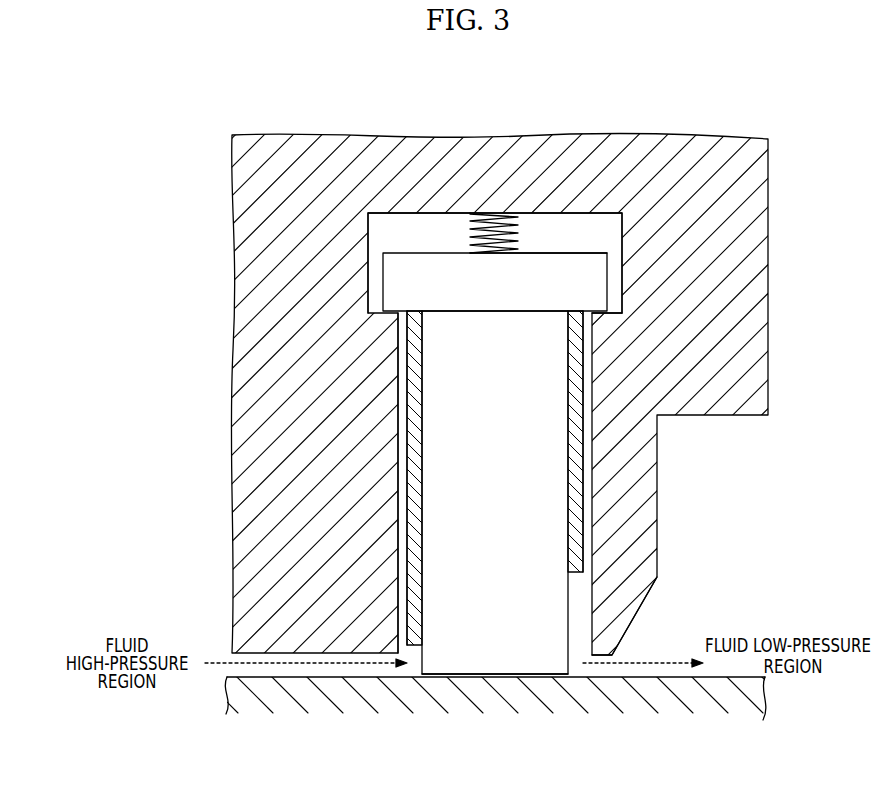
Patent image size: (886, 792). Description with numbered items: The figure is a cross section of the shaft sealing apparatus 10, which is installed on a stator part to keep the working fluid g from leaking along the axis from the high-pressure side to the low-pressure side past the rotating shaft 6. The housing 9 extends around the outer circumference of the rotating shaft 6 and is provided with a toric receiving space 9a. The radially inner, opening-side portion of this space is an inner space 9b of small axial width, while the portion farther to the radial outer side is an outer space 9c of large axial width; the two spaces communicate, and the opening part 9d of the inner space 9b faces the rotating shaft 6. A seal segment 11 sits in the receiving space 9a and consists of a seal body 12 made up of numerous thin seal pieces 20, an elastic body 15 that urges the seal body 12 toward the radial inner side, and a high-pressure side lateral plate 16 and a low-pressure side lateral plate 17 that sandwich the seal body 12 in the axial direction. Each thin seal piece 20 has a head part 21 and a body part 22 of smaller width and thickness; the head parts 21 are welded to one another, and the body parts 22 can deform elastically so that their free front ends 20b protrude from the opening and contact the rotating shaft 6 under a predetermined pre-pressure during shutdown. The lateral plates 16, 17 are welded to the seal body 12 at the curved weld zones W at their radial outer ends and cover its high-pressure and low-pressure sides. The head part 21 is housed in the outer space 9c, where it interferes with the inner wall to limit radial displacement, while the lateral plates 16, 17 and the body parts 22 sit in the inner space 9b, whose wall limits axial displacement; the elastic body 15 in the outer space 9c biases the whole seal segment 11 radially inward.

The rotating shaft 6 is at (767, 690).
The housing 9 is at (755, 257).
The receiving space 9a is at (594, 240).
The inner space 9b is at (397, 378).
The outer space 9c is at (400, 222).
The opening part 9d is at (598, 636).
The shaft sealing apparatus 10 is at (443, 396).
The seal segment 11 is at (568, 240).
The seal body 12 is at (536, 252).
The elastic body 15 is at (492, 232).
The high-pressure side lateral plate 16 is at (400, 452).
The low-pressure side lateral plate 17 is at (583, 492).
The thin seal piece 20 is at (433, 507).
The front end 20b is at (490, 676).
The head part 21 is at (395, 282).
The body part 22 is at (445, 572).
The weld zone W is at (421, 327).
The working fluid g is at (333, 665).